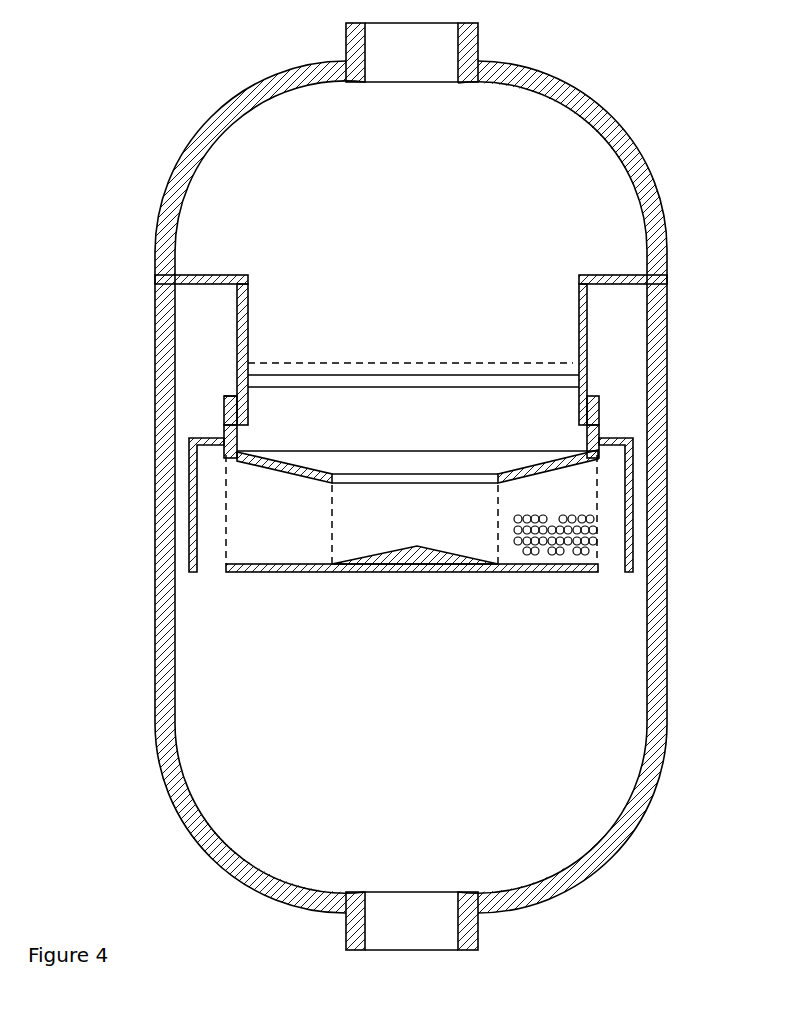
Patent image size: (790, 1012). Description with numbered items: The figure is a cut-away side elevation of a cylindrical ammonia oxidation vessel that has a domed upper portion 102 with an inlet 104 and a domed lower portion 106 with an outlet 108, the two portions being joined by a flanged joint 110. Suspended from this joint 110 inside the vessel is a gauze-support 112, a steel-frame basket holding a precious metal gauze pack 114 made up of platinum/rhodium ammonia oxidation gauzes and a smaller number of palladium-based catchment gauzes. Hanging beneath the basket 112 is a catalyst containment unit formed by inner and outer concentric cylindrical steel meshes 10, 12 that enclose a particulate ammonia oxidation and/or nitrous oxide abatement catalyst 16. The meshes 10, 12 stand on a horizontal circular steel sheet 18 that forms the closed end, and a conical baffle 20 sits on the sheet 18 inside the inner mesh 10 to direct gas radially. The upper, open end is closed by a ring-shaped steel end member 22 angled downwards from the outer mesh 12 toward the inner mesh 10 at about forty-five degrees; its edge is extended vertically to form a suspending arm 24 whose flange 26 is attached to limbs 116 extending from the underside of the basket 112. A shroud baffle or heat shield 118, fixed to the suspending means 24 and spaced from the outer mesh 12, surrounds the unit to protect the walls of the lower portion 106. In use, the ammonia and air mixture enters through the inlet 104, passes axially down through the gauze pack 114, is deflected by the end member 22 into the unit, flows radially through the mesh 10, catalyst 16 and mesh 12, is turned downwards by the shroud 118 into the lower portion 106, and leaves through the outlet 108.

The inner cylindrical mesh 10 is at (333, 527).
The outer cylindrical mesh 12 is at (227, 527).
The particulate catalyst 16 is at (552, 553).
The circular steel sheet 18 is at (318, 572).
The conical baffle 20 is at (422, 565).
The ring-shaped end member 22 is at (285, 462).
The suspending arm 24 is at (223, 429).
The flange 26 is at (224, 396).
The domed upper portion 102 is at (627, 137).
The inlet 104 is at (478, 42).
The domed lower portion 106 is at (667, 718).
The outlet 108 is at (478, 935).
The flanged joint 110 is at (667, 277).
The gauze-support 112 is at (579, 328).
The precious metal gauze pack 114 is at (417, 362).
The limbs 116 is at (230, 417).
The shroud baffle 118 is at (189, 553).